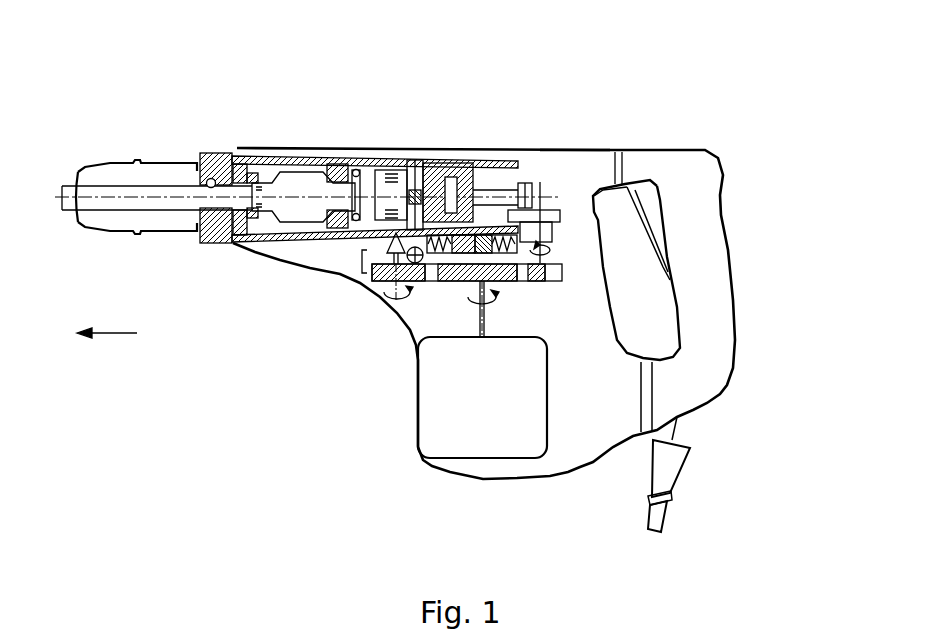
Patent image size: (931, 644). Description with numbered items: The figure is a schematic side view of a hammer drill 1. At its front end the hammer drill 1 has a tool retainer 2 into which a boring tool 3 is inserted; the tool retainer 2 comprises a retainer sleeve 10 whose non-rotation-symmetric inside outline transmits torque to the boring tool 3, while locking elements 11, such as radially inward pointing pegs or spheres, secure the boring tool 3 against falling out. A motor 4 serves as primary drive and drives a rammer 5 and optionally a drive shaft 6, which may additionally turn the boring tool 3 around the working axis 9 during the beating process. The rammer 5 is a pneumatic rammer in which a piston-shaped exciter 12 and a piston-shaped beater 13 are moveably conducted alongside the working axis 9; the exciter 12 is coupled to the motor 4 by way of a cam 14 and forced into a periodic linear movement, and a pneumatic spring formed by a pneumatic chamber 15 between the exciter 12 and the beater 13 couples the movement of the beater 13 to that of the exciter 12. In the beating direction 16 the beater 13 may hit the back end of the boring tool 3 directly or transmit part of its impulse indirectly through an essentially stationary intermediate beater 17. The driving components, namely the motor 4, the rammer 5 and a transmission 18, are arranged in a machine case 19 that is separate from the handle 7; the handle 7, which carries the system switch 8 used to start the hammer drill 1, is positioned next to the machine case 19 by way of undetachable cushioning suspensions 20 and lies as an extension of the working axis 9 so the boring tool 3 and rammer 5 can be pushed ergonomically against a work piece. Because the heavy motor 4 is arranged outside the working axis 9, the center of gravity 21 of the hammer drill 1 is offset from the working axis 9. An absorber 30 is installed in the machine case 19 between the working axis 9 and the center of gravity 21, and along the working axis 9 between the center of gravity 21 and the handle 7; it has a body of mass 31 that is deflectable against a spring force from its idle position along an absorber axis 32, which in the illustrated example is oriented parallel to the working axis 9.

The hammer drill 1 is at (148, 44).
The tool retainer 2 is at (120, 160).
The boring tool 3 is at (177, 192).
The motor 4 is at (428, 425).
The rammer 5 is at (302, 97).
The drive shaft 6 is at (244, 158).
The handle 7 is at (710, 250).
The system switch 8 is at (653, 203).
The working axis 9 is at (100, 224).
The retainer sleeve 10 is at (204, 182).
The locking elements 11 is at (214, 180).
The exciter 12 is at (426, 238).
The beater 13 is at (399, 186).
The cam 14 is at (523, 185).
The pneumatic chamber 15 is at (421, 172).
The beating direction 16 is at (122, 337).
The intermediate beater 17 is at (300, 183).
The transmission 18 is at (343, 273).
The machine case 19 is at (569, 158).
The cushioning suspensions 20 is at (619, 155).
The center of gravity 21 is at (397, 280).
The absorber 30 is at (478, 238).
The body of mass 31 is at (492, 237).
The absorber axis 32 is at (448, 238).